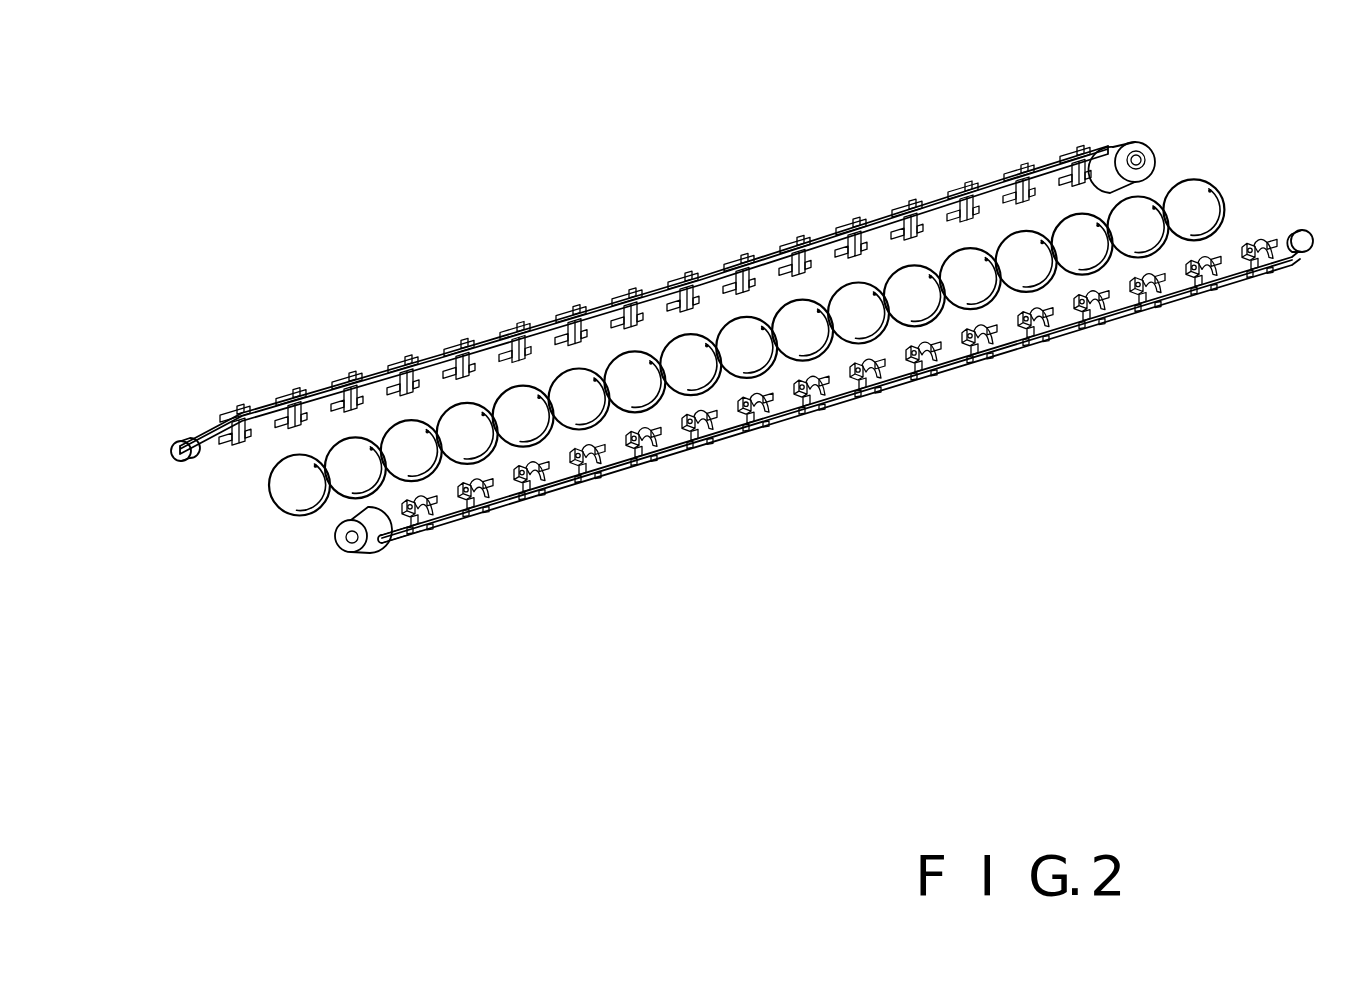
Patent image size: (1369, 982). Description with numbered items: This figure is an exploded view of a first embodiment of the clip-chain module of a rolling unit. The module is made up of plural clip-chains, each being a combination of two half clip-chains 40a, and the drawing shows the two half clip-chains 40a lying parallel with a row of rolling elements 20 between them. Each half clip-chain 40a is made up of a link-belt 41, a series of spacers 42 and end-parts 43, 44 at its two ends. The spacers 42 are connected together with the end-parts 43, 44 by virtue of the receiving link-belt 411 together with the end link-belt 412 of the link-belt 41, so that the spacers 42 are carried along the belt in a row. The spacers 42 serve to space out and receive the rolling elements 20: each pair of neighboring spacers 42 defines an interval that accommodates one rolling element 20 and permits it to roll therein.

The rolling element 20 is at (1010, 240).
The half clip-chain 40a is at (749, 405).
The link-belt 41 is at (440, 355).
The receiving link-belt 411 is at (568, 490).
The end link-belt 412 is at (393, 540).
The spacer 42 is at (1160, 305).
The end-part 43 is at (347, 538).
The end-part 44 is at (183, 462).